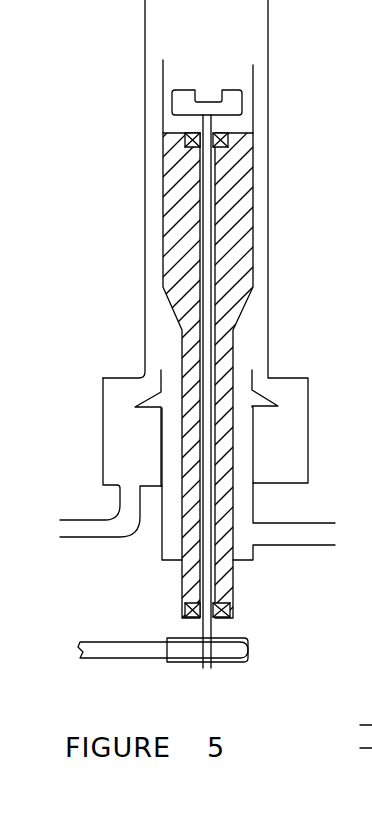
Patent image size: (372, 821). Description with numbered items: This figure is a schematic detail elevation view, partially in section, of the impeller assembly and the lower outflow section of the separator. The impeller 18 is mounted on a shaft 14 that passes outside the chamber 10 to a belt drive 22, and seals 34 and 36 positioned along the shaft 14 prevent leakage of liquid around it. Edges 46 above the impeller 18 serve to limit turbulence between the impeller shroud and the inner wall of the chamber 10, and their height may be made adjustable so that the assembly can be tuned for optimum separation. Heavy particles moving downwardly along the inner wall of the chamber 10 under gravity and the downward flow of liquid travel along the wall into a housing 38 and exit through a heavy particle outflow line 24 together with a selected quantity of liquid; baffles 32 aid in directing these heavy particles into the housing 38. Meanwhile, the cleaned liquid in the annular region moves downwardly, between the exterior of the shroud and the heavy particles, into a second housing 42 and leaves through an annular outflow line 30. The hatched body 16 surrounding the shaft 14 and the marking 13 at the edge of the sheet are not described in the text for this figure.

The chamber 10 is at (268, 52).
The edges 46 is at (253, 85).
The impeller 18 is at (233, 90).
The seal 34 is at (228, 145).
The rotor body 16 is at (233, 340).
The seal 36 is at (222, 620).
The shaft 14 is at (208, 562).
The housing 38 is at (102, 410).
The baffles 32 is at (268, 408).
The heavy particle outflow line 24 is at (85, 518).
The housing 42 is at (253, 457).
The annular outflow line 30 is at (310, 547).
The belt drive 22 is at (112, 658).
The adjacent figure reference 13 is at (366, 714).